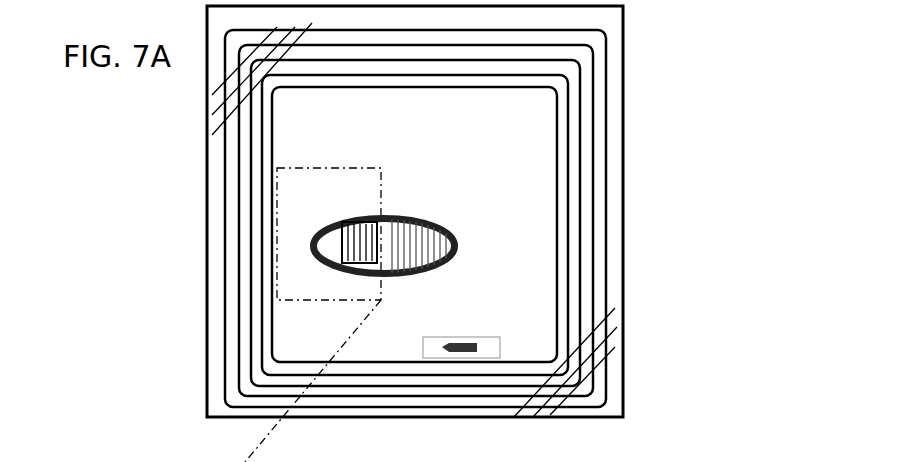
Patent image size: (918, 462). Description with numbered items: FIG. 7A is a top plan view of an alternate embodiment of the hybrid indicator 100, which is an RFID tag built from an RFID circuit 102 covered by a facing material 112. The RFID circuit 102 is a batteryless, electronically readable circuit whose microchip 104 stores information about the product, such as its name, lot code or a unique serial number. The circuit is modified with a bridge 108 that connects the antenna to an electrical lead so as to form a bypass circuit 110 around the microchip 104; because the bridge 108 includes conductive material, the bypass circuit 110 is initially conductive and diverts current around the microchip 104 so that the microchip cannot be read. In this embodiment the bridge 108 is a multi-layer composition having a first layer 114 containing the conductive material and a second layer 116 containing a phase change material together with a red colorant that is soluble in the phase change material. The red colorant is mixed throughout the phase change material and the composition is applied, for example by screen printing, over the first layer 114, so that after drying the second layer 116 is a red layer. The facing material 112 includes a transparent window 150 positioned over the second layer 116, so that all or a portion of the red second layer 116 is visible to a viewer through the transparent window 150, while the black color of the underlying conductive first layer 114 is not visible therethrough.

The hybrid indicator 100 is at (686, 185).
The RFID circuit 102 is at (672, 258).
The microchip 104 is at (492, 347).
The bridge 108 is at (379, 188).
The bypass circuit 110 is at (347, 333).
The facing material 112 is at (623, 413).
The first layer 114 is at (327, 231).
The second layer 116 is at (447, 228).
The transparent window 150 is at (342, 238).